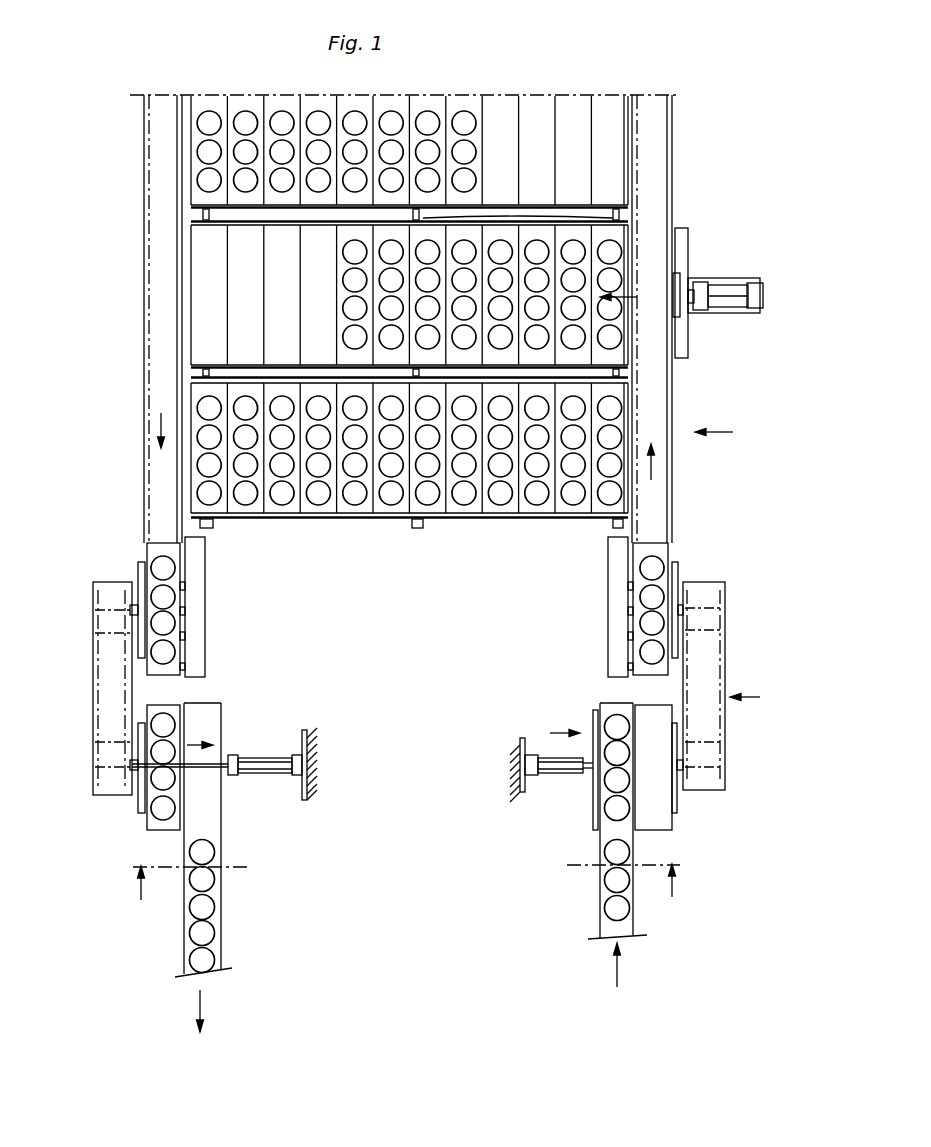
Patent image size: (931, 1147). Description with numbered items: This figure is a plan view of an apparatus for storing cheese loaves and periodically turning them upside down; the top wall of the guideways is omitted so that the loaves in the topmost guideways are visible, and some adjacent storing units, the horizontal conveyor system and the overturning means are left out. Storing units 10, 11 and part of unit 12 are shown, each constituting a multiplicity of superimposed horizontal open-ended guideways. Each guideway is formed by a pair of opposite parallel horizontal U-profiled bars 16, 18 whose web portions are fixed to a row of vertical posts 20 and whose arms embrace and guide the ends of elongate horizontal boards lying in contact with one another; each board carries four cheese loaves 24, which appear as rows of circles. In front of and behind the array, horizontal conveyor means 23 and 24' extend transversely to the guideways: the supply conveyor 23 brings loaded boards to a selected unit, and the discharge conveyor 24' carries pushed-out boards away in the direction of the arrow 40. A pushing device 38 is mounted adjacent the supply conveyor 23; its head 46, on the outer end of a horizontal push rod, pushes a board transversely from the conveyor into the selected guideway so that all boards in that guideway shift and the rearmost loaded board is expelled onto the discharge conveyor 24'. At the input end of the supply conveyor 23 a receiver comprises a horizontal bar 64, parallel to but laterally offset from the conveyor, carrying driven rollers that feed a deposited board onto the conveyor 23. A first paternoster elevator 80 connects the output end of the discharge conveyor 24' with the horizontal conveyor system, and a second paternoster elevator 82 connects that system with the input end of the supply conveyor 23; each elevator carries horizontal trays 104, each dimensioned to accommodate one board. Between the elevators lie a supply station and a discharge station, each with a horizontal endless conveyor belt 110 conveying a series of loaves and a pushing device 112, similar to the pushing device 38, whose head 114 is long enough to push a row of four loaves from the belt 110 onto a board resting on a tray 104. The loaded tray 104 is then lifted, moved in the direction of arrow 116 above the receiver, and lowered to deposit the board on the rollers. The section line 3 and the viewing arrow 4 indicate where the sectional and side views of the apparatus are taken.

The section line 3- 3 is at (406, 886).
The view direction 4 is at (736, 565).
The storing unit 10 is at (180, 460).
The storing unit 11 is at (180, 250).
The storing unit 12 is at (180, 192).
The U-profiled bar 16 is at (220, 366).
The U-profiled bar 18 is at (215, 226).
The vertical post 20 is at (610, 524).
The supply conveyor 23 is at (660, 405).
The cheese loaf 24 is at (409, 489).
The discharge conveyor 24' is at (135, 319).
The pushing device 38 is at (696, 265).
The arrow 40 is at (145, 432).
The head 46 is at (672, 285).
The horizontal bar 64 is at (615, 655).
The first elevator 80 is at (93, 660).
The second elevator 82 is at (712, 650).
The tray 104 is at (658, 803).
The endless conveyor belt 110 is at (610, 927).
The pushing device 112 is at (553, 762).
The head 114 is at (588, 708).
The arrow 116 is at (658, 455).